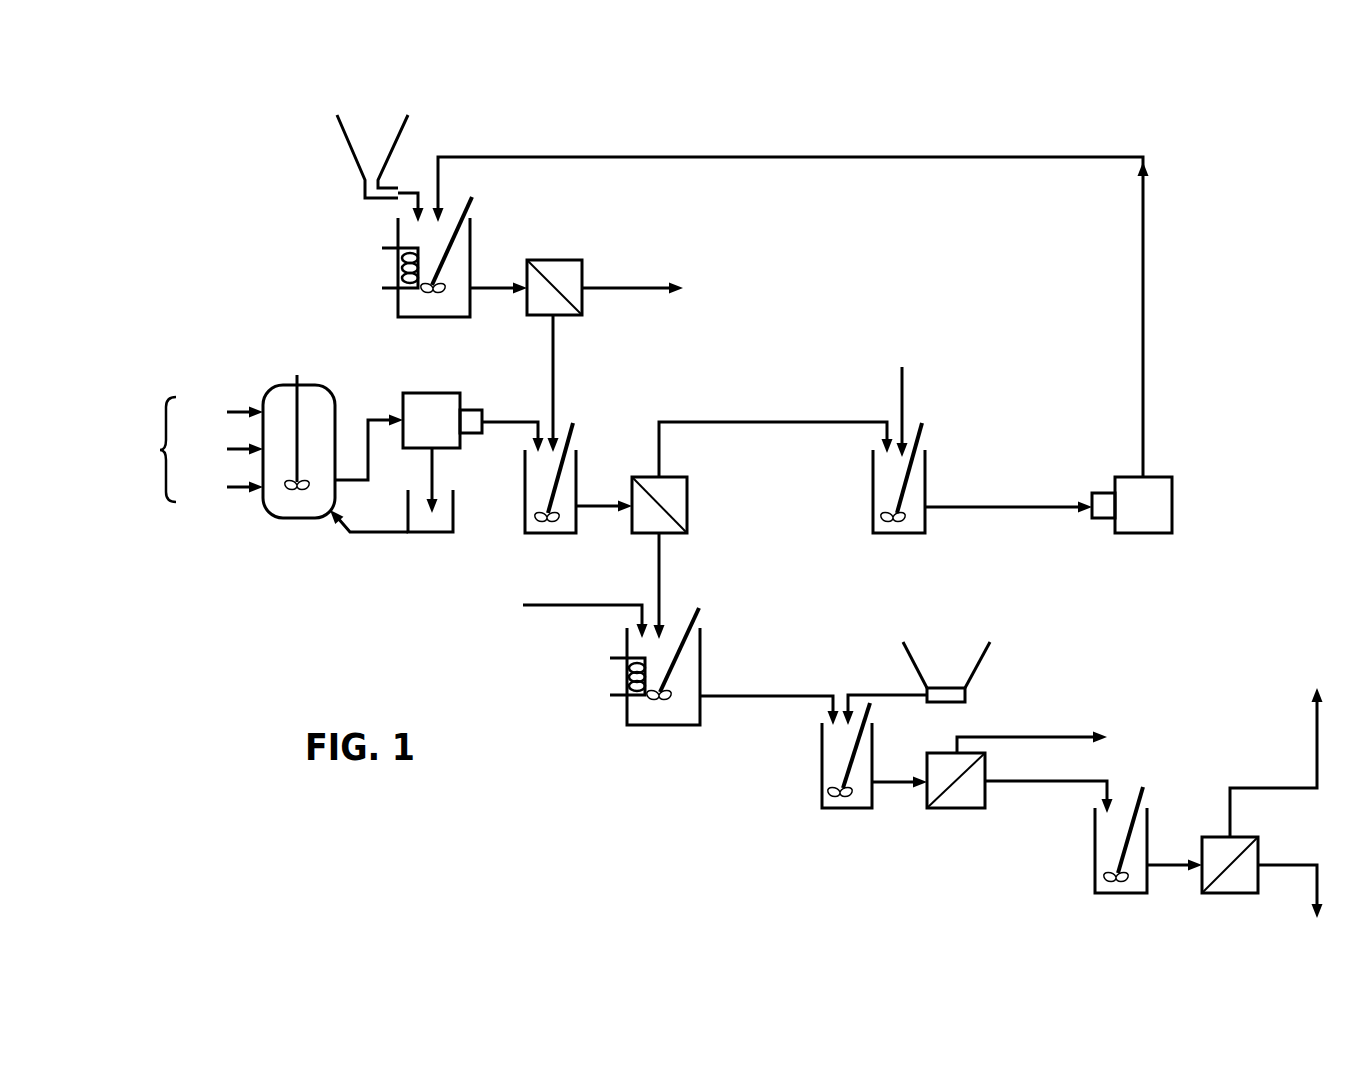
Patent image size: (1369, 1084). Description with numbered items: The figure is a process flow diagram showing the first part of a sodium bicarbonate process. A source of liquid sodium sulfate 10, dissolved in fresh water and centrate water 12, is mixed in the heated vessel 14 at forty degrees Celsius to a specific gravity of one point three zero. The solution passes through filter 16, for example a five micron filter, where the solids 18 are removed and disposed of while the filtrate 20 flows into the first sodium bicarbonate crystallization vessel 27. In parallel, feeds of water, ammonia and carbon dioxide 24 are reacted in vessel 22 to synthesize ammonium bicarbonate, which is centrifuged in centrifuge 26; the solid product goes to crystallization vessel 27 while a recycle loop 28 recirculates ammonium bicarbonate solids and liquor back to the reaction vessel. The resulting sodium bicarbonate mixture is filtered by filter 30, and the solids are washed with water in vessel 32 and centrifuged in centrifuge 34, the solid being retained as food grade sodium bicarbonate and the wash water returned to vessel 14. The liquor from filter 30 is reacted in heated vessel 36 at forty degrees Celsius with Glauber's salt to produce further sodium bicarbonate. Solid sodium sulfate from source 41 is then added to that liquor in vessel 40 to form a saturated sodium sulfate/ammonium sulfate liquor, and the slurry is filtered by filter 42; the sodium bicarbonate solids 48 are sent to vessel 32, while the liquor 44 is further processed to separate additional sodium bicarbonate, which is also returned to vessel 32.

The source of liquid sodium sulfate 10 is at (343, 133).
The centrate water 12 is at (1002, 157).
The vessel 14 is at (472, 233).
The filter 16 is at (553, 260).
The solids 18 is at (672, 280).
The filtrate 20 is at (553, 352).
The vessel 22 is at (282, 386).
The feeds of water, ammonia and carbon dioxide 24 is at (147, 452).
The centrifuge 26 is at (417, 395).
The first sodium bicarbonate crystallization vessel 27 is at (578, 460).
The recycle loop 28 is at (484, 512).
The filter 30 is at (687, 502).
The vessel 32 is at (927, 460).
The centrifuge 34 is at (1152, 478).
The vessel 36 is at (625, 716).
The vessel 40 is at (815, 797).
The source of solid sodium sulfate 41 is at (990, 658).
The filter 42 is at (937, 808).
The liquor 44 is at (1043, 783).
The sodium bicarbonate solids 48 is at (875, 388).